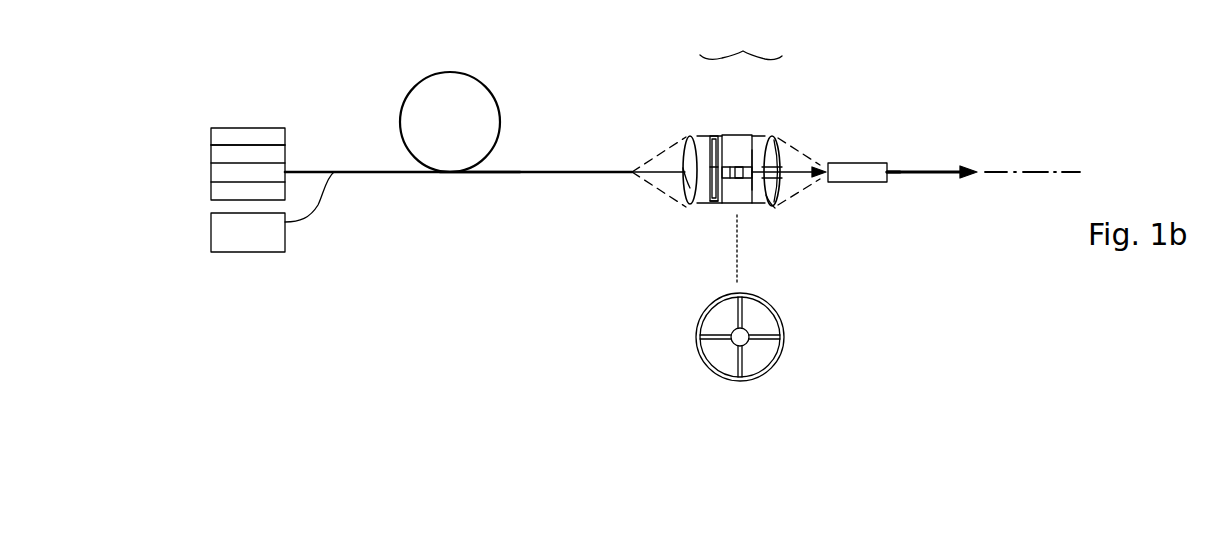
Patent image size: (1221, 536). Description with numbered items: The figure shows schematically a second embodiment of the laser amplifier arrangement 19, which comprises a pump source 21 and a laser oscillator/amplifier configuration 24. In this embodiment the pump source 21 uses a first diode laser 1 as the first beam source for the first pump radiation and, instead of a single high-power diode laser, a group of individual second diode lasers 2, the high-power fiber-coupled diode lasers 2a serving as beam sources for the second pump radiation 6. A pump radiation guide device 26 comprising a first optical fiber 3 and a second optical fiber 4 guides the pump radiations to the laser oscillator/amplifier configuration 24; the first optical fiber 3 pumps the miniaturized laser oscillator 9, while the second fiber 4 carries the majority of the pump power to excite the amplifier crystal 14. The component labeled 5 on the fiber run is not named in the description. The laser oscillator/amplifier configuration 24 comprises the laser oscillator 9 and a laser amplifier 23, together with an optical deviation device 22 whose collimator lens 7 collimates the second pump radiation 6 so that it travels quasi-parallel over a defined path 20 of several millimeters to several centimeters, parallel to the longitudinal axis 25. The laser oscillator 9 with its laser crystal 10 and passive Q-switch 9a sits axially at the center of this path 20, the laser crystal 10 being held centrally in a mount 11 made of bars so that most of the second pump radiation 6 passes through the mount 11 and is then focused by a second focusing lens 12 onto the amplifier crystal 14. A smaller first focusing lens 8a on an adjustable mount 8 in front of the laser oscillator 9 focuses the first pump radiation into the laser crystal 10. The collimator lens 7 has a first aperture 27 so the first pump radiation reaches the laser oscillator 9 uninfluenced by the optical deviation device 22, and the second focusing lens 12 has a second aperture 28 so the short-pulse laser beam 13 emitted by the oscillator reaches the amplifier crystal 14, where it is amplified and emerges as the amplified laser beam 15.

The first diode laser 1 is at (211, 239).
The second diode laser 2 is at (206, 136).
The high-power fiber-coupled diode laser 2a is at (244, 172).
The first optical fiber 3 is at (318, 198).
The second optical fiber 4 is at (307, 162).
The fiber coil 5 is at (455, 72).
The second pump radiation 6 is at (661, 156).
The collimator lens 7 is at (688, 132).
The mount 8 is at (712, 135).
The first focusing lens 8a is at (712, 202).
The laser oscillator 9 is at (738, 162).
The passive Q-switch 9a is at (753, 168).
The laser crystal 10 is at (733, 182).
The mount 11 is at (786, 356).
The second focusing lens 12 is at (779, 212).
The laser beam 13 is at (818, 167).
The amplifier crystal 14 is at (863, 184).
The amplified laser beam 15 is at (928, 168).
The laser amplifier arrangement 19 is at (424, 398).
The path length 20 is at (741, 42).
The pump source 21 is at (357, 278).
The optical deviation device 22 is at (657, 233).
The laser amplifier 23 is at (886, 132).
The laser oscillator/amplifier configuration 24 is at (649, 344).
The longitudinal axis 25 is at (1068, 171).
The pump radiation guide device 26 is at (490, 182).
The first aperture 27 is at (688, 182).
The second aperture 28 is at (771, 207).